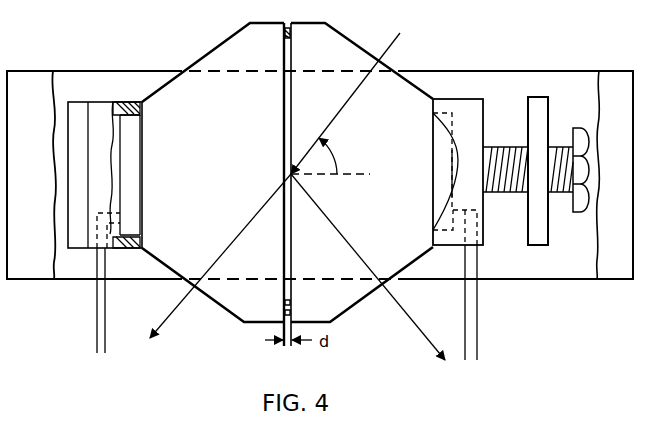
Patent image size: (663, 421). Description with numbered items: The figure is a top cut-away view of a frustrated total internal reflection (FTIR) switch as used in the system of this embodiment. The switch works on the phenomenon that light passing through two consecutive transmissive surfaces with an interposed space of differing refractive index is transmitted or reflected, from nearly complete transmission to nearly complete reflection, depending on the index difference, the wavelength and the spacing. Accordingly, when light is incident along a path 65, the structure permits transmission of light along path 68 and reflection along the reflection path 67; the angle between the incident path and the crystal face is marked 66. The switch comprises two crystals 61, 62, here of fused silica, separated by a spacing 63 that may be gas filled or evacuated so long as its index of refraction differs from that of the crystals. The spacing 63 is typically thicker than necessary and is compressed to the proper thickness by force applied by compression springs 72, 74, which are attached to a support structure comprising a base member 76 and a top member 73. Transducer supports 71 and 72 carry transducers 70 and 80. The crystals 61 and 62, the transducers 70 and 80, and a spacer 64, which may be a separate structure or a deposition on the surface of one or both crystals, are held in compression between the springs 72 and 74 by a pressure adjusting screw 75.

The crystal 61 is at (343, 302).
The crystal 62 is at (229, 58).
The spacing 63 is at (285, 258).
The spacer 64 is at (292, 33).
The incident light path 65 is at (392, 43).
The angle of incidence 66 is at (332, 156).
The reflection path 67 is at (420, 328).
The transmission path 68 is at (173, 310).
The transducer 70 is at (131, 222).
The transducer support 71 is at (468, 120).
The compression spring 72 is at (78, 117).
The top member 73 is at (38, 89).
The compression spring 74 is at (527, 110).
The pressure adjusting screw 75 is at (588, 133).
The base member 76 is at (581, 79).
The transducer 80 is at (440, 156).